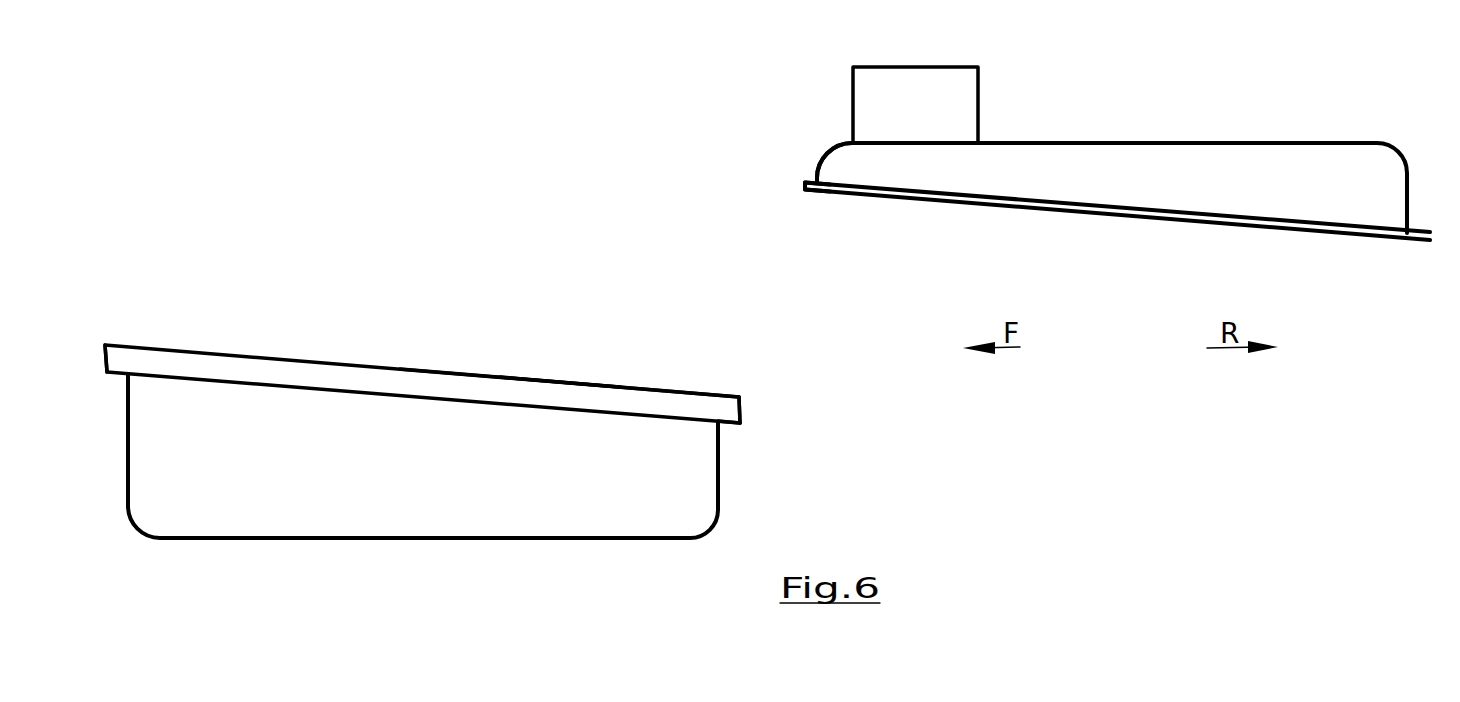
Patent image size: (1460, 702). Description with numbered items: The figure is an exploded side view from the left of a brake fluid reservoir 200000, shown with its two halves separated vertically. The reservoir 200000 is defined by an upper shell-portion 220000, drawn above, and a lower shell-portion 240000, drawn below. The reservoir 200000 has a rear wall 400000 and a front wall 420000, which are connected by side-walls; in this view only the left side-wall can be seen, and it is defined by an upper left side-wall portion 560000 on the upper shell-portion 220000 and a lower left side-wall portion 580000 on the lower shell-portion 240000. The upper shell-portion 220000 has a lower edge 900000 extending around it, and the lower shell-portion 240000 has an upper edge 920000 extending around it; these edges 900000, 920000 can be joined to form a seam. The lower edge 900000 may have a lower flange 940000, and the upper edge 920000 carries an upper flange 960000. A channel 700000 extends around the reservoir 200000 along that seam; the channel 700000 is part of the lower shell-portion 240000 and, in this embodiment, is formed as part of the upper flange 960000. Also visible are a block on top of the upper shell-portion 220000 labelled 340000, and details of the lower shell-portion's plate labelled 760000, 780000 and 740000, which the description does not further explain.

The brake fluid reservoir 200000 is at (656, 110).
The upper shell-portion 220000 is at (1117, 160).
The mounting block 340000 is at (966, 66).
The front wall 420000 is at (813, 157).
The upper left side-wall portion 560000 is at (1275, 198).
The lower edge 900000 is at (935, 201).
The lower flange 940000 is at (805, 182).
The rear wall 400000 is at (730, 484).
The channel 700000 is at (369, 354).
The lid plate front end 760000 is at (118, 343).
The lid plate lower surface 780000 is at (510, 392).
The upper edge 920000 is at (642, 386).
The lid plate rear end 740000 is at (740, 419).
The upper flange 960000 is at (742, 425).
The lower shell-portion 240000 is at (452, 522).
The lower left side-wall portion 580000 is at (453, 483).